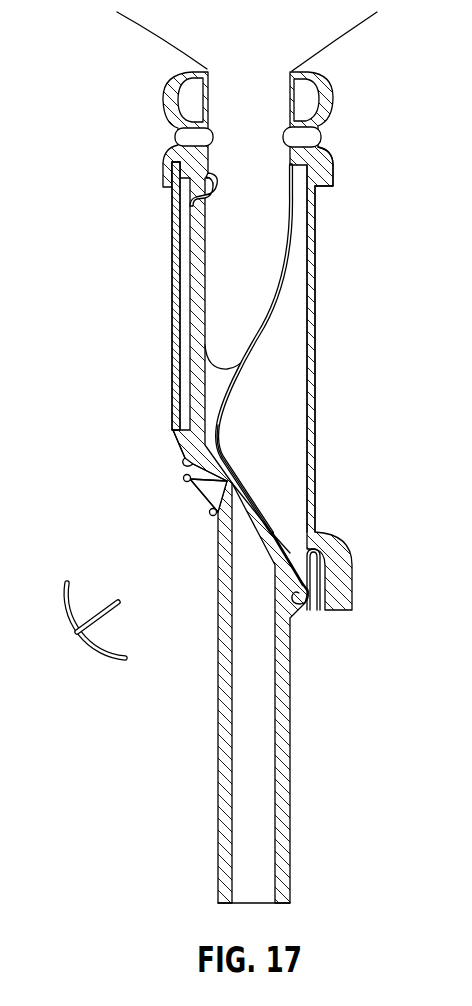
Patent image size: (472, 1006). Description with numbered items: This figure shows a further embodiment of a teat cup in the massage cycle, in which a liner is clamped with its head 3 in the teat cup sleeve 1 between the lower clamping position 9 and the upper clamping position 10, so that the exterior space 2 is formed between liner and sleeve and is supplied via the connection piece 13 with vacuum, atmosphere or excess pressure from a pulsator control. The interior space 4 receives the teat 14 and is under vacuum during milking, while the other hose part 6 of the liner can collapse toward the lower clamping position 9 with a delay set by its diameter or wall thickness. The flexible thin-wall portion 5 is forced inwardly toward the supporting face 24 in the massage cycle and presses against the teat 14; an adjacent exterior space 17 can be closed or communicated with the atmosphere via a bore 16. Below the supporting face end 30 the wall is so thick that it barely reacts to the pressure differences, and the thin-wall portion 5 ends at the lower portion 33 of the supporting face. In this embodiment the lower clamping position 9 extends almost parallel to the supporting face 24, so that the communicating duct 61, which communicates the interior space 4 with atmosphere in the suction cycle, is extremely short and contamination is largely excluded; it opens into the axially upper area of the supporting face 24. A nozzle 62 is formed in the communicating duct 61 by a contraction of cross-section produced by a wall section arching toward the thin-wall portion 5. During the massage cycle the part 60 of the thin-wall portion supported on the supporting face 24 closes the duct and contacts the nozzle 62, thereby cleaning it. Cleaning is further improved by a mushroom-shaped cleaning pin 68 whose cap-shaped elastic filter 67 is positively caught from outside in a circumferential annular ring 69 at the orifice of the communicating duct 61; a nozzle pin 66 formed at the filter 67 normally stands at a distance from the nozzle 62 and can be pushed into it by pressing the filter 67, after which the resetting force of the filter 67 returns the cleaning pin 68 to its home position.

The teat cup sleeve 1 is at (313, 260).
The exterior space 2 is at (279, 396).
The head 3 is at (333, 93).
The interior space 4 is at (217, 380).
The thin-wall portion 5 is at (178, 135).
The hose part 6 is at (190, 278).
The lower clamping position 9 is at (183, 446).
The upper clamping position 10 is at (333, 177).
The connection piece 13 is at (352, 579).
The teat 14 is at (260, 205).
The bore 16 is at (321, 143).
The exterior space 17 is at (318, 131).
The supporting face 24 is at (274, 487).
The supporting face end 30 is at (213, 462).
The lower portion of the supporting face 33 is at (292, 552).
The part of the thin-wall portion 60 is at (262, 520).
The communicating duct 61 is at (221, 481).
The nozzle 62 is at (183, 478).
The nozzle pin 66 is at (100, 610).
The filter 67 is at (102, 660).
The cleaning pin 68 is at (70, 635).
The annular ring 69 is at (210, 515).